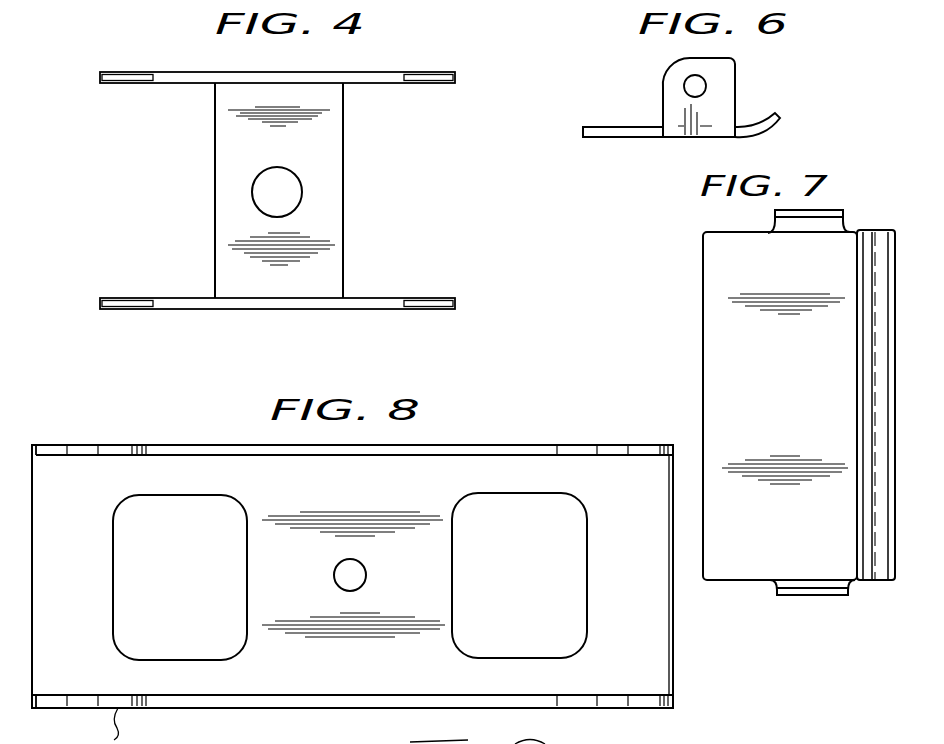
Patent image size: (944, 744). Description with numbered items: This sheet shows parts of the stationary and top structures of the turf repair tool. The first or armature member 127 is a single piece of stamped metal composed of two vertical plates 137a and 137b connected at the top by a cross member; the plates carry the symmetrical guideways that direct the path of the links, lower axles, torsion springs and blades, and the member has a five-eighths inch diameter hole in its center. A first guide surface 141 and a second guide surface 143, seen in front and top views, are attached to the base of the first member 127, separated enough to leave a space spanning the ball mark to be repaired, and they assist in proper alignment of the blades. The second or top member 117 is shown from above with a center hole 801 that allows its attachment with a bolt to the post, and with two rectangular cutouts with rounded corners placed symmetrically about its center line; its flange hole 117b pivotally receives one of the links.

In FIG. 4, the first member 127 is at (325, 150).
In FIG. 4, the vertical plate 137a is at (172, 72).
In FIG. 4, the vertical plate 137b is at (170, 298).
In FIG. 6, the first guide surface 141 is at (724, 97).
In FIG. 7, the first guide surface 141 is at (736, 402).
In FIG. 6, the second guide surface 143 is at (727, 88).
In FIG. 7, the second guide surface 143 is at (722, 289).
In FIG. 8, the second member 117 is at (660, 420).
In FIG. 8, the hole 117b is at (657, 708).
In FIG. 8, the hole 801 is at (368, 574).